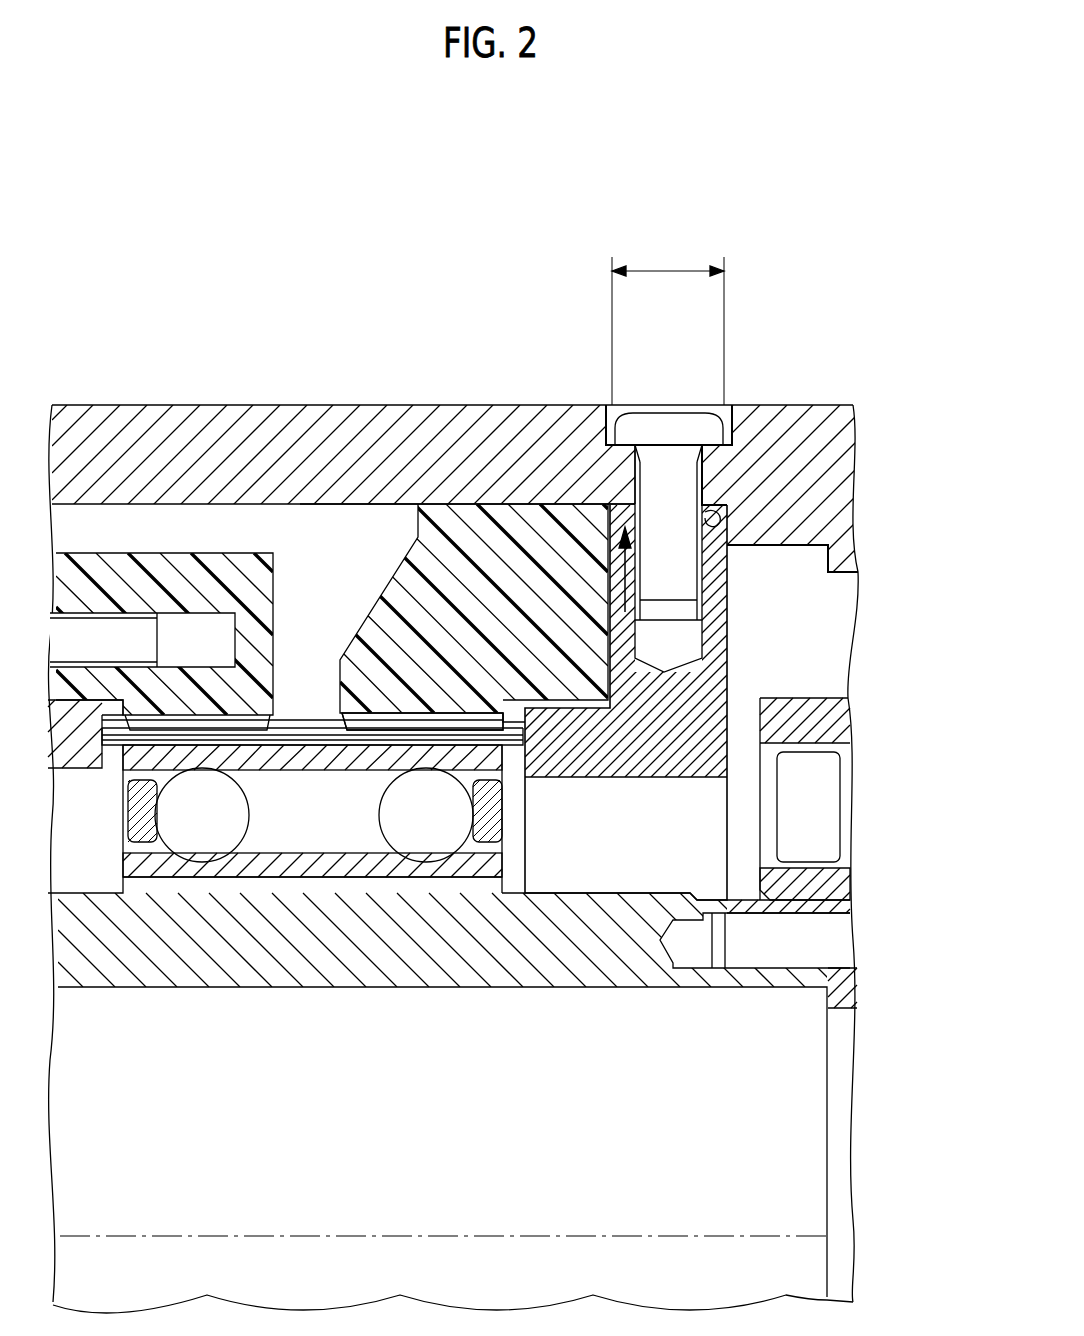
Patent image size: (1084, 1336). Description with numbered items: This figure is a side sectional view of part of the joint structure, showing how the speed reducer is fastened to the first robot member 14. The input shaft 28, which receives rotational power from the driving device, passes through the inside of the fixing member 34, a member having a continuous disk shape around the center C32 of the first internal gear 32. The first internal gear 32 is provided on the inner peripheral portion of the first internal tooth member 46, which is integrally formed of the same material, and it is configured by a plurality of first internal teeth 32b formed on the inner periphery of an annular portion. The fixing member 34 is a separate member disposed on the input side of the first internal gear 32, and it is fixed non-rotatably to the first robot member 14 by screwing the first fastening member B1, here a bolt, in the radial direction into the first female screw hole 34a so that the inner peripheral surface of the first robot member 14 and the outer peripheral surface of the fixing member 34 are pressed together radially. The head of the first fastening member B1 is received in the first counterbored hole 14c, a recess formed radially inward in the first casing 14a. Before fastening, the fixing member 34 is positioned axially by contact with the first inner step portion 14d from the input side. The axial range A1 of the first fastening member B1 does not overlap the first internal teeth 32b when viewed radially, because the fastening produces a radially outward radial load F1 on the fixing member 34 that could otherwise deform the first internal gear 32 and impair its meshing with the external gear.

The first robot member 14 is at (791, 388).
The first casing 14a is at (525, 405).
The first counterbored hole 14c is at (713, 405).
The first inner step portion 14d is at (722, 518).
The fixing member 34 is at (730, 650).
The first female screw hole 34a is at (738, 566).
The first internal tooth member 46 is at (455, 520).
The first internal gear 32 is at (371, 744).
The first internal teeth 32b is at (423, 725).
The input shaft 28 is at (596, 988).
The radial load F1 is at (610, 572).
The axial range A1 is at (667, 271).
The first fastening member B1 is at (667, 413).
The center of the first internal gear C32 is at (828, 1236).